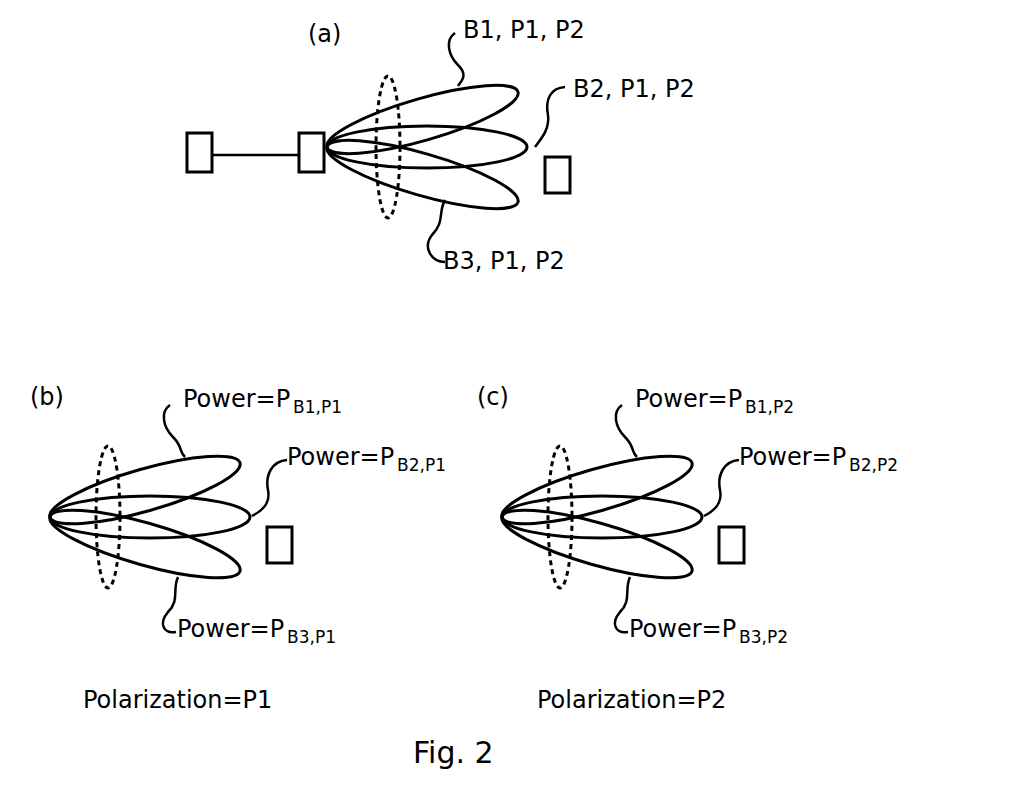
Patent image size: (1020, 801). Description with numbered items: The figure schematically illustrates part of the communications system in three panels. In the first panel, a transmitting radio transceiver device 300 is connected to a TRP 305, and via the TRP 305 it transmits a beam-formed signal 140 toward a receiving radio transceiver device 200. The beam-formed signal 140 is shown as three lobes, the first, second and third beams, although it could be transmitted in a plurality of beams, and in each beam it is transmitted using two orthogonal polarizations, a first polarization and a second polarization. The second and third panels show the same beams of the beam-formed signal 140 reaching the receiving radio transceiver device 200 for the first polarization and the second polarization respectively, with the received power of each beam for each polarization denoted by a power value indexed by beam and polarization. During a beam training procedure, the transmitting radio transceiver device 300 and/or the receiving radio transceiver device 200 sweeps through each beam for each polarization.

The beam-formed signal 140 is at (388, 77).
The receiving radio transceiver device 200 is at (570, 177).
The transmitting radio transceiver device 300 is at (192, 172).
The TRP 305 is at (304, 172).